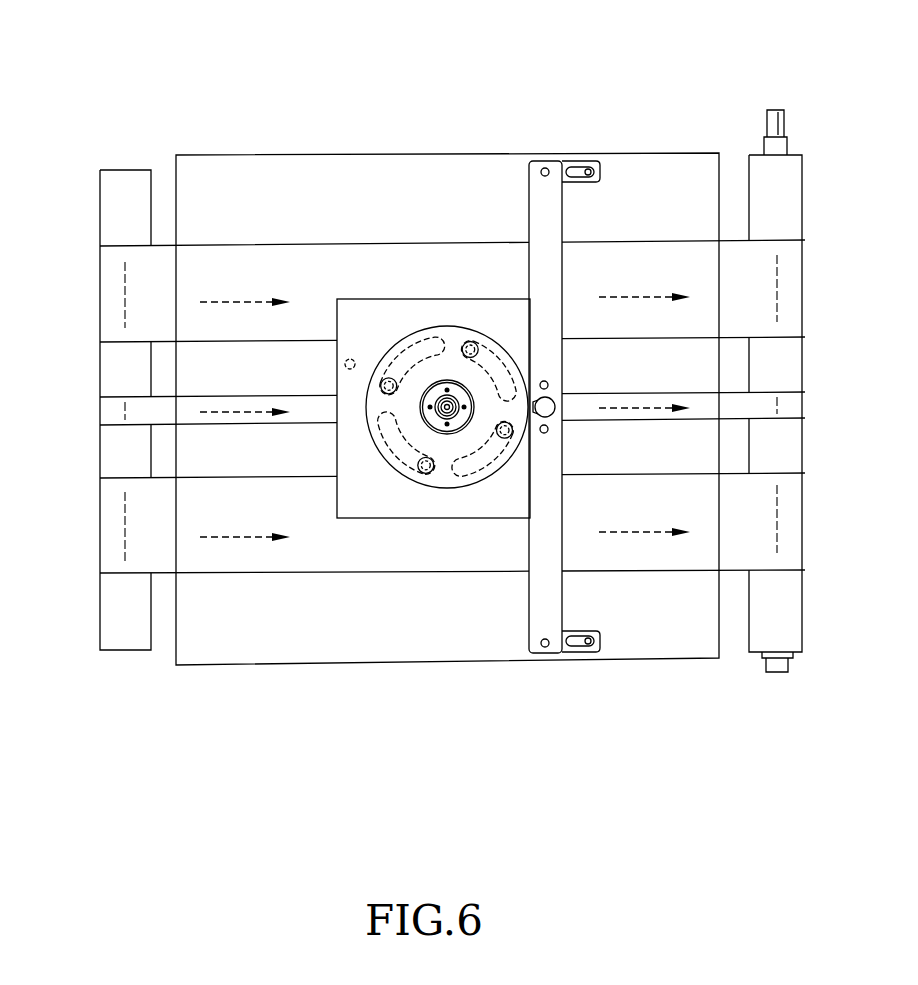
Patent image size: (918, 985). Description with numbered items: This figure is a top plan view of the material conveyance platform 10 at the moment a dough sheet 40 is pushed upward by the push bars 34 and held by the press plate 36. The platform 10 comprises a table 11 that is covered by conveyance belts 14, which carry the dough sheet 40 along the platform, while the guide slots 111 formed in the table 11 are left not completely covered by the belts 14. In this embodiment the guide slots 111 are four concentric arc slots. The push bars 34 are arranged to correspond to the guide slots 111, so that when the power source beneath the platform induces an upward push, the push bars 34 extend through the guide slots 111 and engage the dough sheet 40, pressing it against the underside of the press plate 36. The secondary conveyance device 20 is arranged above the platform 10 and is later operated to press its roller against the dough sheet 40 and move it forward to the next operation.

The material conveyance platform 10 is at (418, 347).
The table 11 is at (253, 173).
The conveyance belt 14 is at (108, 522).
The secondary conveyance device 20 is at (545, 148).
The push bar 34 is at (386, 378).
The press plate 36 is at (437, 269).
The dough sheet 40 is at (338, 323).
The guide slot 111 is at (416, 340).